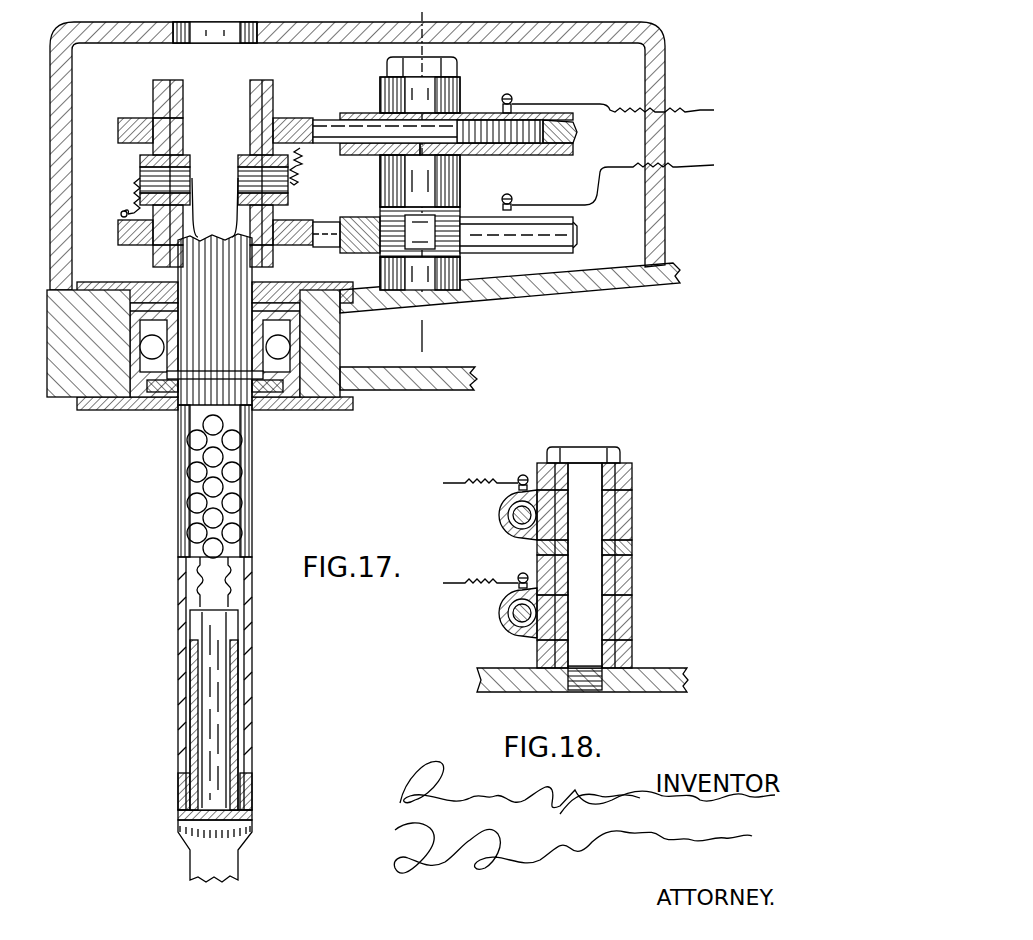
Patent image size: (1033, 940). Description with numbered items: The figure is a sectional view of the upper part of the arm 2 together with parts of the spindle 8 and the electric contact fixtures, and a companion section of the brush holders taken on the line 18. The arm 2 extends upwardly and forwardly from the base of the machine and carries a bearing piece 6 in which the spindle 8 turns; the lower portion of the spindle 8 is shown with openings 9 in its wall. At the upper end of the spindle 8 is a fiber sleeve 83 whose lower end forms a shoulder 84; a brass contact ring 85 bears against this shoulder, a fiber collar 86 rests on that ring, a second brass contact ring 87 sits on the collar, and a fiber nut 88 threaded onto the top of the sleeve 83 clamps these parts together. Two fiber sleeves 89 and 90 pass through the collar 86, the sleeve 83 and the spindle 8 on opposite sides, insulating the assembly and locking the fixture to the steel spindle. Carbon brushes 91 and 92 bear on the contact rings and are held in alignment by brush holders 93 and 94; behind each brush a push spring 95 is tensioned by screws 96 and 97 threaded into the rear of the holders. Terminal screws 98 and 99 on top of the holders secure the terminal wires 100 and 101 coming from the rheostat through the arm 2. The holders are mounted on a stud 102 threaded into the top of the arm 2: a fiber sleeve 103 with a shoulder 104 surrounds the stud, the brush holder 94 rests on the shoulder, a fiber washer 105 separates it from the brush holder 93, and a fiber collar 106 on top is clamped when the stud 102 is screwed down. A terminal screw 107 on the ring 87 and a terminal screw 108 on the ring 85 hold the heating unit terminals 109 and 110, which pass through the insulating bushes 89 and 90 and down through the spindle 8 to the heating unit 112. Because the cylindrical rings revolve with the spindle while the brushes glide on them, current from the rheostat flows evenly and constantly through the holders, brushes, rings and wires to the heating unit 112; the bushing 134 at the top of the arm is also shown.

In FIG. 17, the arm 2 is at (476, 381).
In FIG. 18, the arm 2 is at (678, 668).
In FIG. 17, the bearing piece 6 is at (83, 382).
In FIG. 17, the spindle 8 is at (183, 532).
In FIG. 17, the perforations 9 is at (178, 488).
In FIG. 17, the section line 18 is at (427, 176).
In FIG. 17, the fiber sleeve 83 is at (178, 80).
In FIG. 17, the shoulder 84 is at (153, 258).
In FIG. 17, the brass contact ring 85 is at (118, 236).
In FIG. 17, the fiber collar 86 is at (293, 218).
In FIG. 17, the brass contact ring 87 is at (118, 127).
In FIG. 17, the fiber nut 88 is at (158, 95).
In FIG. 17, the fiber sleeve 89 is at (140, 160).
In FIG. 17, the fiber sleeve 90 is at (290, 196).
In FIG. 17, the carbon brush 91 is at (316, 118).
In FIG. 18, the carbon brush 91 is at (500, 520).
In FIG. 17, the carbon brush 92 is at (326, 249).
In FIG. 18, the carbon brush 92 is at (507, 617).
In FIG. 17, the brush holder 93 is at (362, 113).
In FIG. 18, the brush holder 93 is at (500, 502).
In FIG. 17, the brush holder 94 is at (364, 254).
In FIG. 18, the brush holder 94 is at (630, 612).
In FIG. 17, the push spring 95 is at (560, 156).
In FIG. 17, the screw 96 is at (578, 133).
In FIG. 17, the screw 97 is at (577, 230).
In FIG. 17, the terminal screw 98 is at (508, 93).
In FIG. 18, the terminal screw 98 is at (521, 473).
In FIG. 17, the terminal screw 99 is at (505, 195).
In FIG. 18, the terminal screw 99 is at (521, 574).
In FIG. 17, the terminal wire 100 is at (233, 183).
In FIG. 18, the terminal wire 100 is at (458, 483).
In FIG. 17, the terminal wire 101 is at (199, 180).
In FIG. 17, the stud 102 is at (442, 68).
In FIG. 18, the stud 102 is at (583, 568).
In FIG. 18, the fiber sleeve 103 is at (630, 553).
In FIG. 17, the shoulder 104 is at (462, 285).
In FIG. 18, the shoulder 104 is at (623, 660).
In FIG. 17, the fiber washer 105 is at (440, 175).
In FIG. 18, the fiber washer 105 is at (632, 572).
In FIG. 17, the fiber collar 106 is at (460, 92).
In FIG. 18, the fiber collar 106 is at (633, 470).
In FIG. 17, the terminal screw 107 is at (304, 156).
In FIG. 17, the terminal screw 108 is at (121, 214).
In FIG. 17, the heating unit terminal 109 is at (128, 180).
In FIG. 17, the heating unit terminal 110 is at (300, 175).
In FIG. 17, the heating unit 112 is at (224, 696).
In FIG. 17, the bushing 134 is at (309, 8).